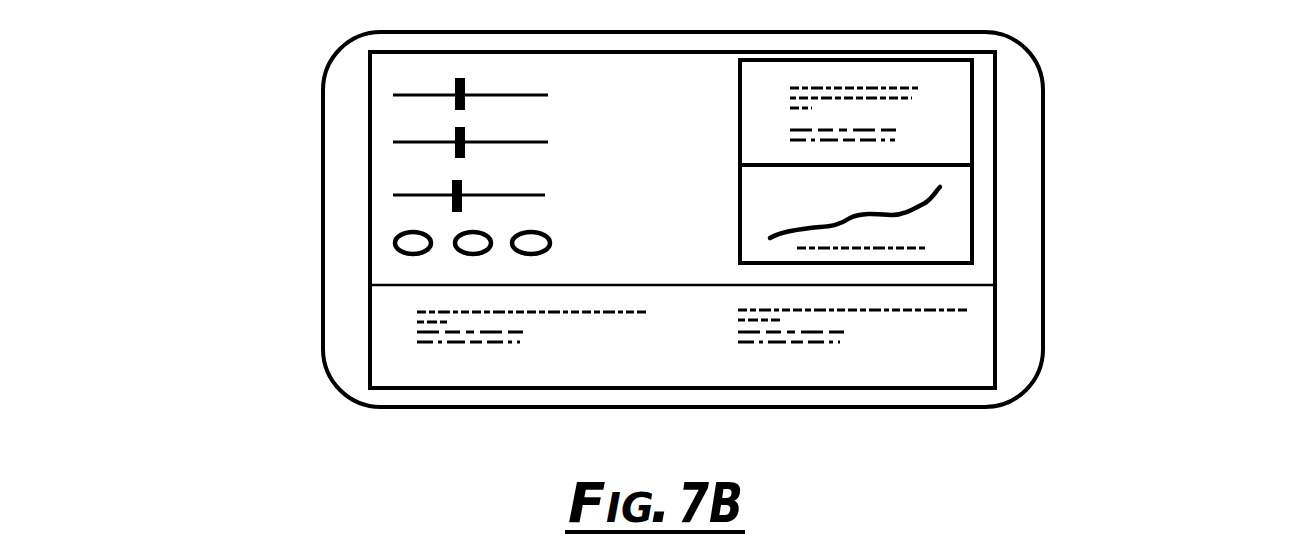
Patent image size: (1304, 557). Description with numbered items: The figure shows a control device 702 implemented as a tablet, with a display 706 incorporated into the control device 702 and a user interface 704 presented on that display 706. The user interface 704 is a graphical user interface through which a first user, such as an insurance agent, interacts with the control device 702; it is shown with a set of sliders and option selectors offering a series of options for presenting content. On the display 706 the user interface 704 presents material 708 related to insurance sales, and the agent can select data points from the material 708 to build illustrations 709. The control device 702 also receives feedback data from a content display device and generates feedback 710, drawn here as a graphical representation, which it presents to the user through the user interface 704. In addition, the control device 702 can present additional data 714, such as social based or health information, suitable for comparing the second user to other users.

The control device 702 is at (310, 165).
The user interface 704 is at (560, 268).
The display 706 is at (972, 149).
The material 708 is at (912, 98).
The illustrations 709 is at (693, 207).
The feedback 710 is at (933, 205).
The additional data 714 is at (913, 313).